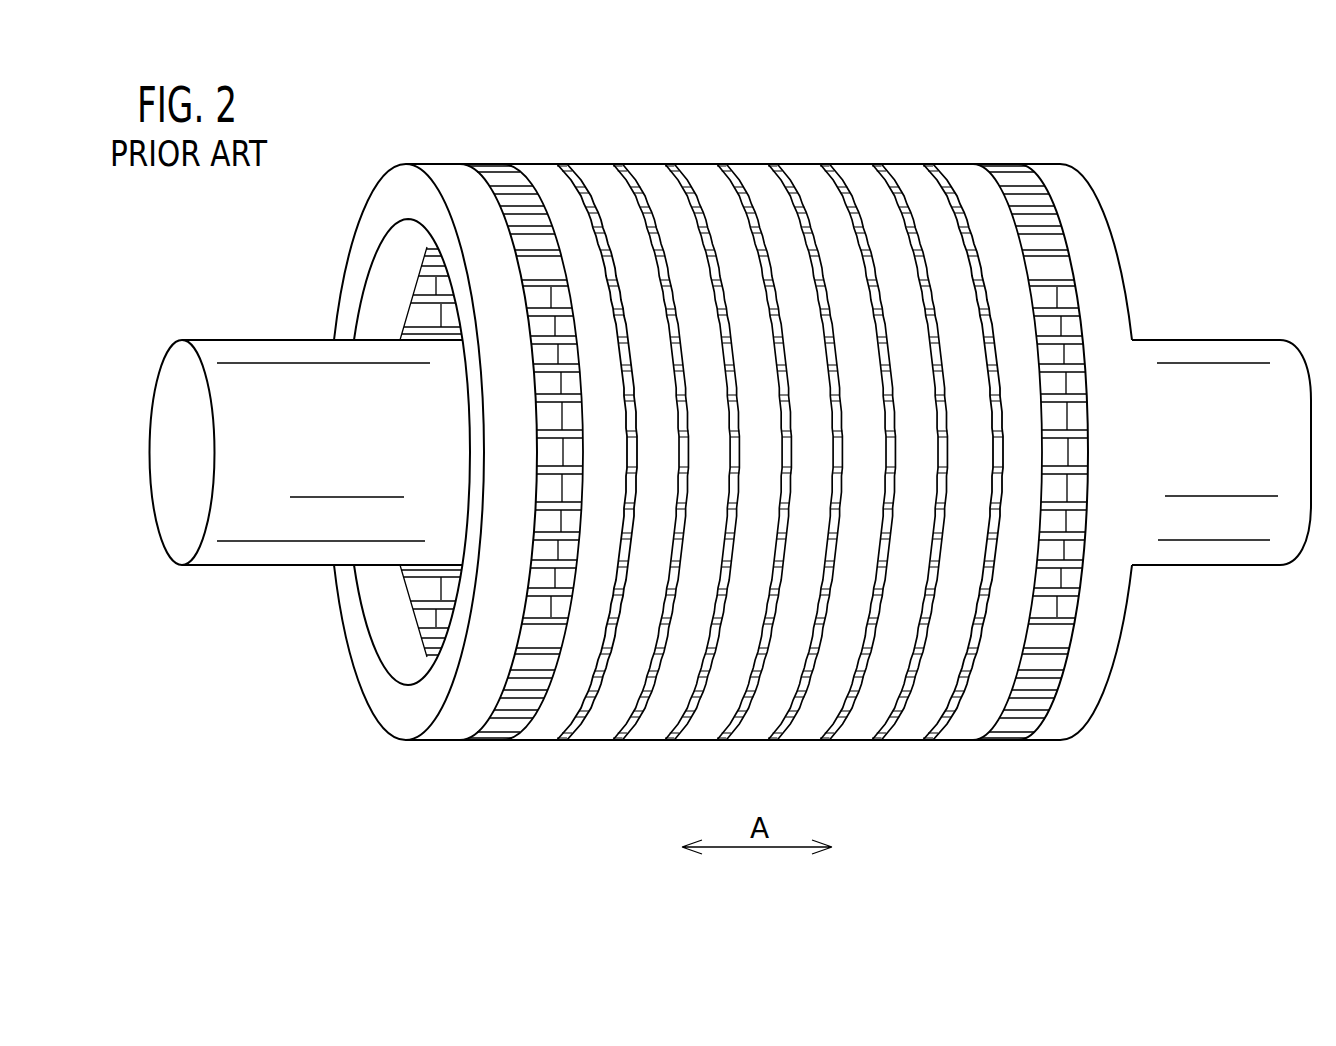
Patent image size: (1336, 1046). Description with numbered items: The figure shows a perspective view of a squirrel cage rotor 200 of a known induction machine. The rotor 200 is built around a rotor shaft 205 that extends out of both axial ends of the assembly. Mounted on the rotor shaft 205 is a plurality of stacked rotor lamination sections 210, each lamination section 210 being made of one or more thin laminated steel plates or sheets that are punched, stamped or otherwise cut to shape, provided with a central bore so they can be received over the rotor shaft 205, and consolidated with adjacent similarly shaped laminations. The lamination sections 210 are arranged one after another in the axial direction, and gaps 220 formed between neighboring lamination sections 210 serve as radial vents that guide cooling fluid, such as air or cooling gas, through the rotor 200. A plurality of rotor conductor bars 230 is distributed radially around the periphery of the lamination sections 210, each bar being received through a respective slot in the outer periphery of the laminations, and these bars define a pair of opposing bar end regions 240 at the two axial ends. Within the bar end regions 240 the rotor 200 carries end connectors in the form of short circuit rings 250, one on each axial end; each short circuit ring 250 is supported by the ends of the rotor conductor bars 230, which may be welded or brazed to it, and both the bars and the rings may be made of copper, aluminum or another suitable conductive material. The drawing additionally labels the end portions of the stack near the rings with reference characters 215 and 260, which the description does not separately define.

The rotor 200 is at (1117, 91).
The rotor shaft 205 is at (173, 340).
The rotor lamination section 210 is at (688, 742).
The end disk 215 is at (537, 175).
The gap 220 is at (622, 166).
The rotor conductor bar 230 is at (1063, 302).
The bar end region 240 is at (497, 778).
The short circuit ring 250 is at (357, 663).
The rib section 260 is at (457, 151).